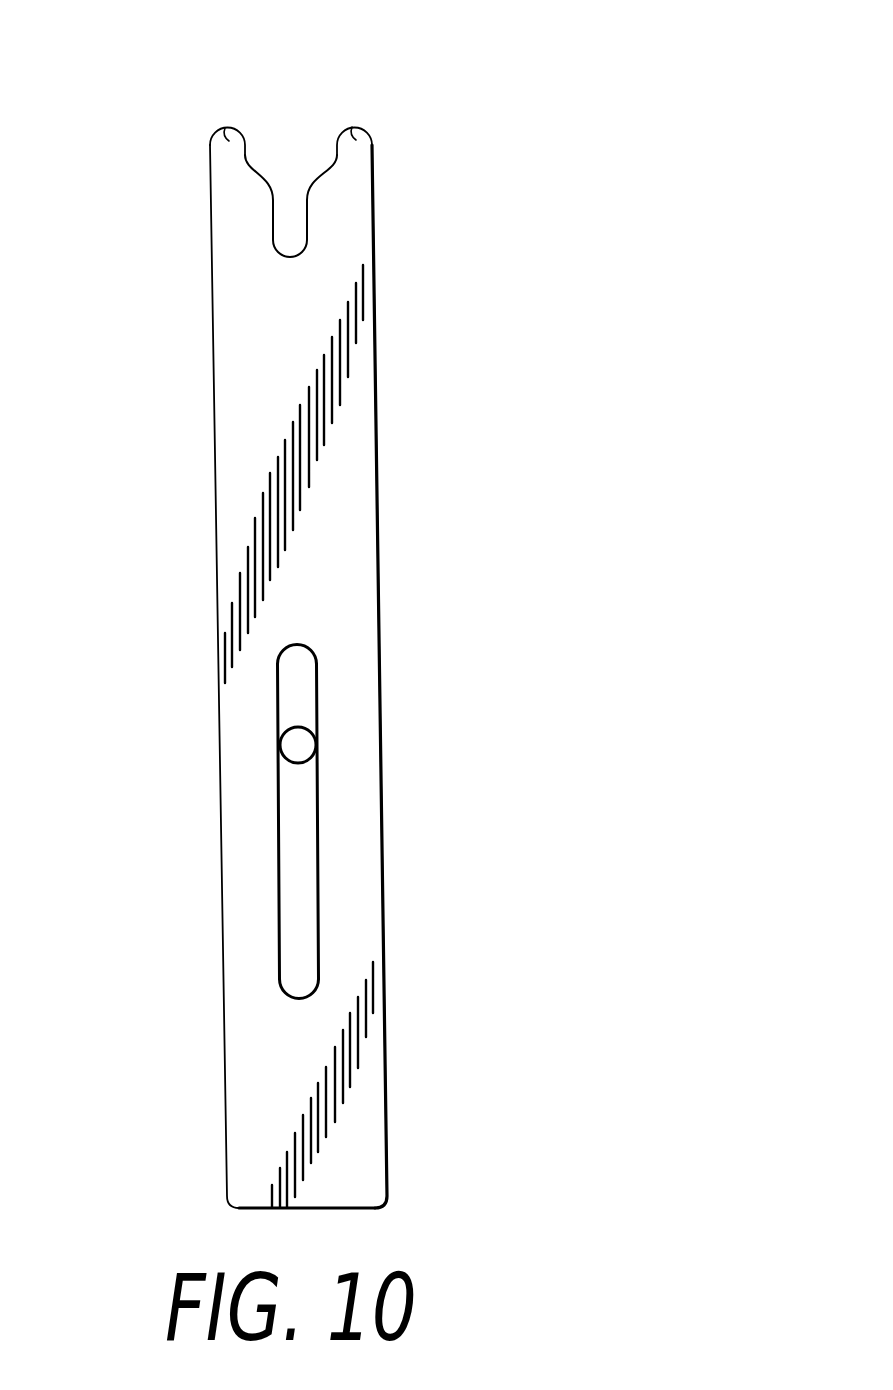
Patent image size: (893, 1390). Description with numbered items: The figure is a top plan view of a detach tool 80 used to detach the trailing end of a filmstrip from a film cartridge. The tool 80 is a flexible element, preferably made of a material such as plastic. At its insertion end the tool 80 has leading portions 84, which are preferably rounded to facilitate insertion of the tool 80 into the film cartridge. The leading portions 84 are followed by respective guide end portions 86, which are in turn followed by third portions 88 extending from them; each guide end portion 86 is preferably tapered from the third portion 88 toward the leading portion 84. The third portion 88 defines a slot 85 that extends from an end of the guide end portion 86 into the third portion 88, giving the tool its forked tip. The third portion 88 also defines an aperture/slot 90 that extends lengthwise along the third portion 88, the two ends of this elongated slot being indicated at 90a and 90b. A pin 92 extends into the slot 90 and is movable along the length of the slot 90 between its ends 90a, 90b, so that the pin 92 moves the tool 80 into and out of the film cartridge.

The detach tool 80 is at (413, 805).
The leading portions 84 is at (350, 127).
The slot 85 is at (287, 228).
The guide end portions 86 is at (257, 193).
The third portions 88 is at (327, 245).
The aperture/slot 90 is at (300, 860).
The upper end of slot 90a is at (293, 645).
The lower end of slot 90b is at (307, 1000).
The pin 92 is at (297, 739).